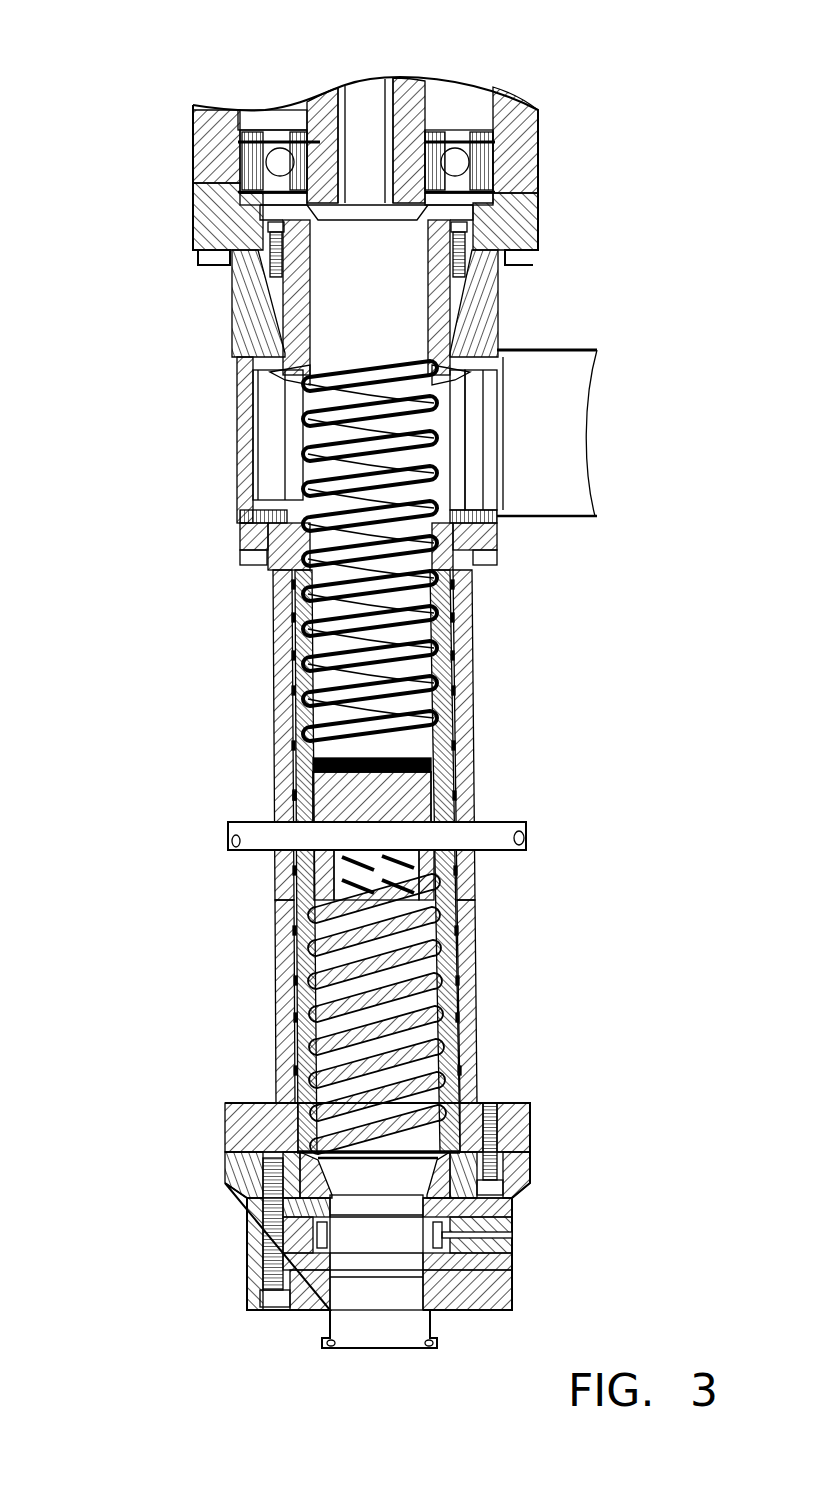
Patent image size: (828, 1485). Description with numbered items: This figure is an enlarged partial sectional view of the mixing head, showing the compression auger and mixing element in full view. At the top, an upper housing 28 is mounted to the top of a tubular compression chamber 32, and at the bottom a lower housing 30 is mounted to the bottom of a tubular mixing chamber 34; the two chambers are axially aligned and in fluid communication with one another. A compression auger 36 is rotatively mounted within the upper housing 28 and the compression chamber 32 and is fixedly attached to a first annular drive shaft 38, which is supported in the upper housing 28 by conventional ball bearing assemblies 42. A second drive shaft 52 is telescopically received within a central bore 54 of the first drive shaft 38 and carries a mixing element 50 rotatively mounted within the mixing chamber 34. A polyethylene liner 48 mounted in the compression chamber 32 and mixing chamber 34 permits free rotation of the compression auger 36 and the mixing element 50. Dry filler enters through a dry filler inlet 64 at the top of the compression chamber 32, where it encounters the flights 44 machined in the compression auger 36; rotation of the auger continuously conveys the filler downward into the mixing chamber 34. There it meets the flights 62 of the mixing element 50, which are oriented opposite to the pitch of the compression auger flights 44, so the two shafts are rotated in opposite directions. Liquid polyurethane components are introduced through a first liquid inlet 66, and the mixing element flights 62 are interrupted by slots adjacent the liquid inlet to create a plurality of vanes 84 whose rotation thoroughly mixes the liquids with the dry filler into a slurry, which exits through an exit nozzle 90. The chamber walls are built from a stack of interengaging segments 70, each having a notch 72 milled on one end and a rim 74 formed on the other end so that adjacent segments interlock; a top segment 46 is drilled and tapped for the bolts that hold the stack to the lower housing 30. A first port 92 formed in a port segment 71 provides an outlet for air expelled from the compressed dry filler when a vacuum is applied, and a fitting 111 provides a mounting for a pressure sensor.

The upper housing 28 is at (538, 150).
The lower housing 30 is at (226, 1148).
The compression chamber 32 is at (272, 617).
The mixing chamber 34 is at (271, 1018).
The compression auger 36 is at (384, 607).
The first annular drive shaft 38 is at (322, 142).
The ball bearing assemblies 42 is at (256, 180).
The flights 44 is at (296, 692).
The top segment 46 is at (232, 318).
The polyethylene liner 48 is at (232, 376).
The mixing element 50 is at (362, 940).
The second drive shaft 52 is at (268, 263).
The central bore 54 is at (393, 112).
The mixing element flights 62 is at (318, 776).
The dry filler inlet 64 is at (503, 430).
The first liquid inlet 66 is at (272, 836).
The interengaging segments 70 is at (474, 745).
The port segment 71 is at (272, 796).
The notch 72 is at (476, 980).
The rim 74 is at (476, 1018).
The vanes 84 is at (330, 893).
The exit nozzle 90 is at (328, 1328).
The first port 92 is at (473, 830).
The fitting 111 is at (238, 441).